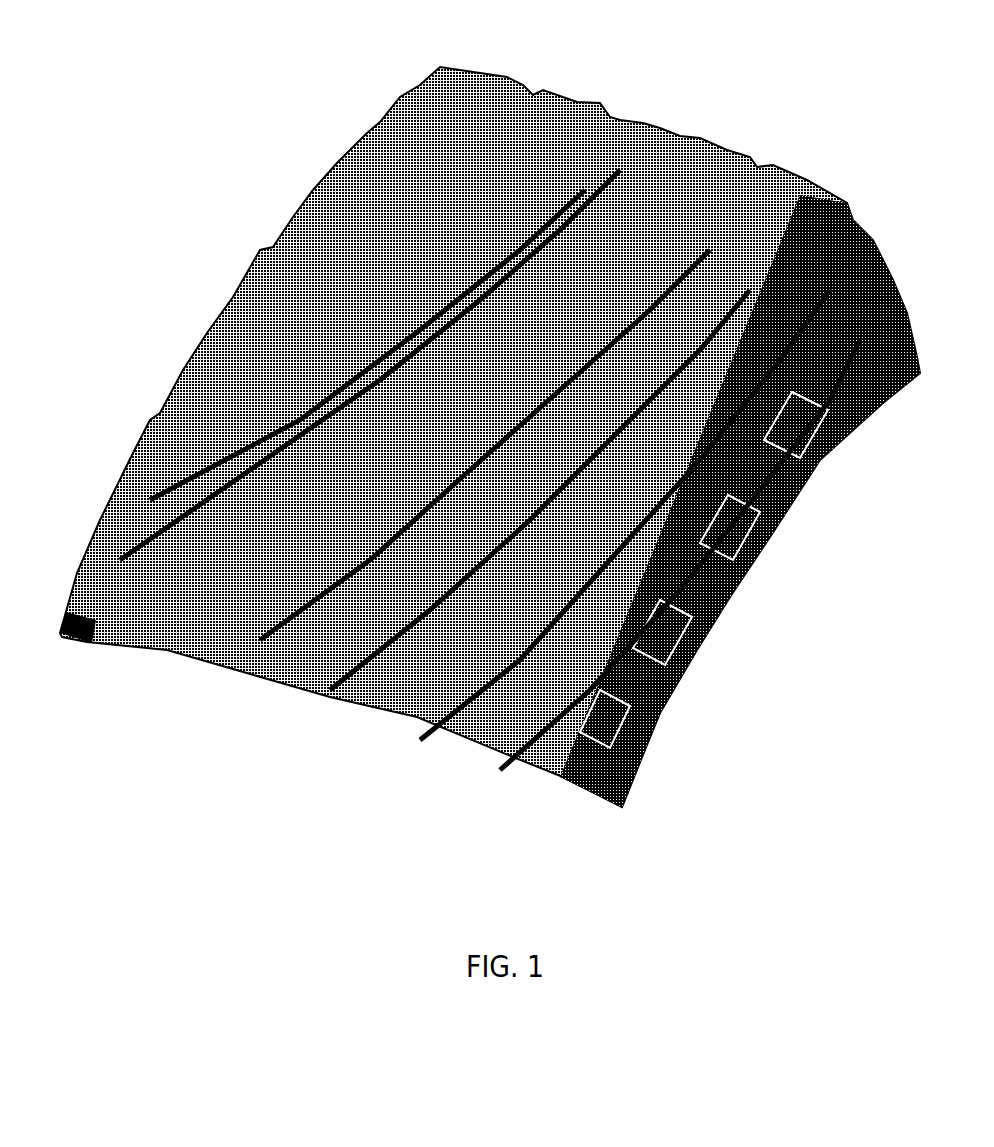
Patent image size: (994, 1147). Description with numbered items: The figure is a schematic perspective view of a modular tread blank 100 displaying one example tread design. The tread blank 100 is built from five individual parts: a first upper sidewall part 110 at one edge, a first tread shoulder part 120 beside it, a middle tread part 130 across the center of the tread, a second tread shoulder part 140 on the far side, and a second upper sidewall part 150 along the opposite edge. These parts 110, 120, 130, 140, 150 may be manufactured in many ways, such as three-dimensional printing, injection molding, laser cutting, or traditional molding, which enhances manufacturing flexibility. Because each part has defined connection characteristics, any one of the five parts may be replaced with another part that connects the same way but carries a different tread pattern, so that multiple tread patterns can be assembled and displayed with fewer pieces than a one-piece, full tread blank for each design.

The modular tread blank 100 is at (182, 137).
The first upper sidewall part 110 is at (68, 642).
The first tread shoulder part 120 is at (503, 77).
The middle tread part 130 is at (633, 127).
The second tread shoulder part 140 is at (787, 177).
The second upper sidewall part 150 is at (823, 455).